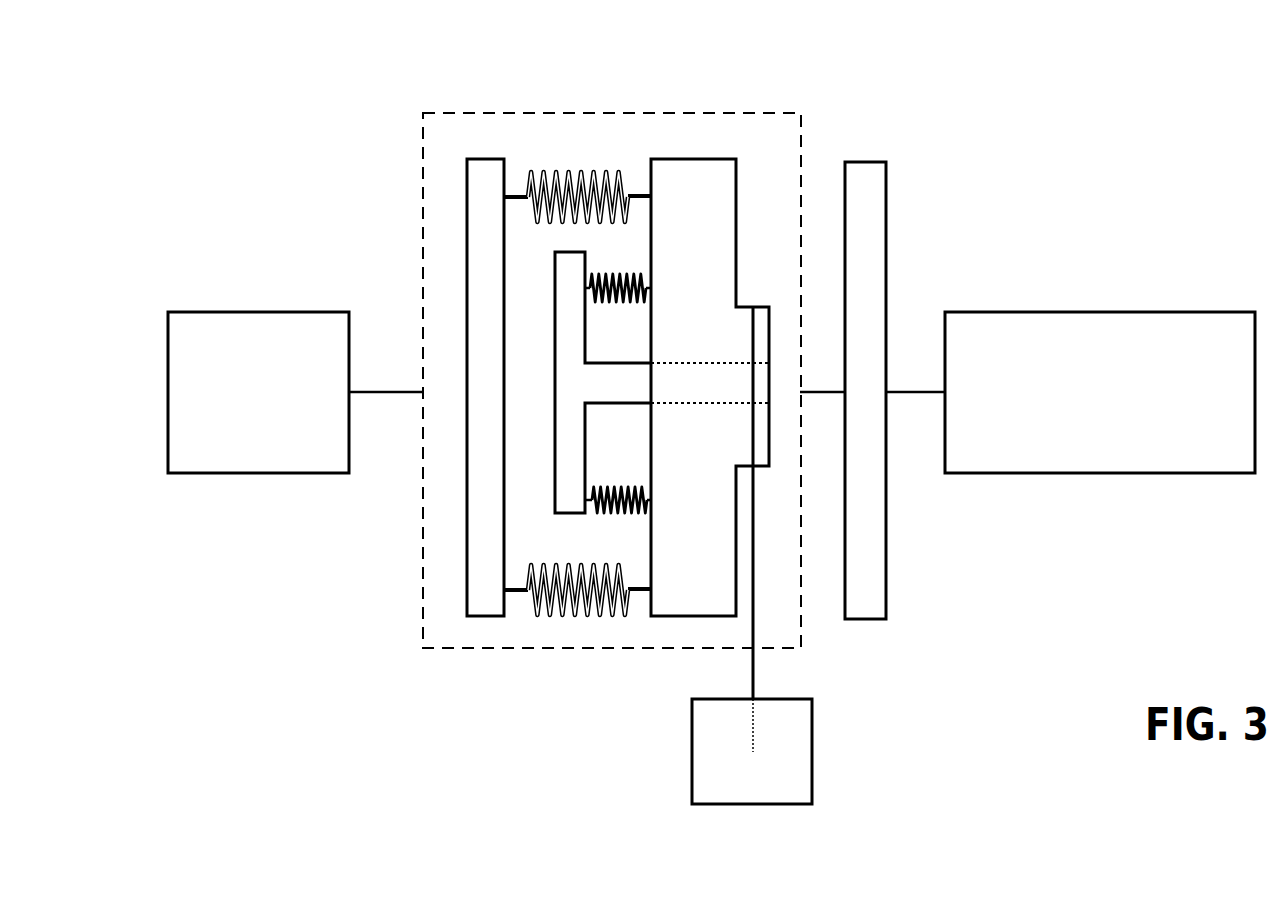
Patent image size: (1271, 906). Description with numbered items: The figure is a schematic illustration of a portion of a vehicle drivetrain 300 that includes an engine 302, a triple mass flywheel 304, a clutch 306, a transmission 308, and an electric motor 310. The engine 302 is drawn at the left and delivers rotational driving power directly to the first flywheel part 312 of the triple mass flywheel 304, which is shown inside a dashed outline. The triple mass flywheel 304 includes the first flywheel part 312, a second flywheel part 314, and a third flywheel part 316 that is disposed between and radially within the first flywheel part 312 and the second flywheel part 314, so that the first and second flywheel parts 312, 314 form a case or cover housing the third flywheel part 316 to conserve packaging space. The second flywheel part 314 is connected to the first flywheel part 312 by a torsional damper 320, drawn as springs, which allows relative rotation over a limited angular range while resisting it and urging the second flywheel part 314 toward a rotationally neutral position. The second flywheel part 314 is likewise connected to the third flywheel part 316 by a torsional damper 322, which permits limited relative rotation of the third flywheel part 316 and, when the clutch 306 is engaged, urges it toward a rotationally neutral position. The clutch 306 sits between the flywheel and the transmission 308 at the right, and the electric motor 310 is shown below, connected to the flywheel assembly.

The vehicle drivetrain 300 is at (993, 142).
The engine 302 is at (272, 312).
The triple mass flywheel 304 is at (805, 110).
The clutch 306 is at (886, 585).
The transmission 308 is at (1118, 312).
The electric motor 310 is at (812, 774).
The first flywheel part 312 is at (486, 159).
The second flywheel part 314 is at (708, 159).
The third flywheel part 316 is at (555, 328).
The torsional damper 320 is at (556, 172).
The torsional damper 322 is at (614, 274).